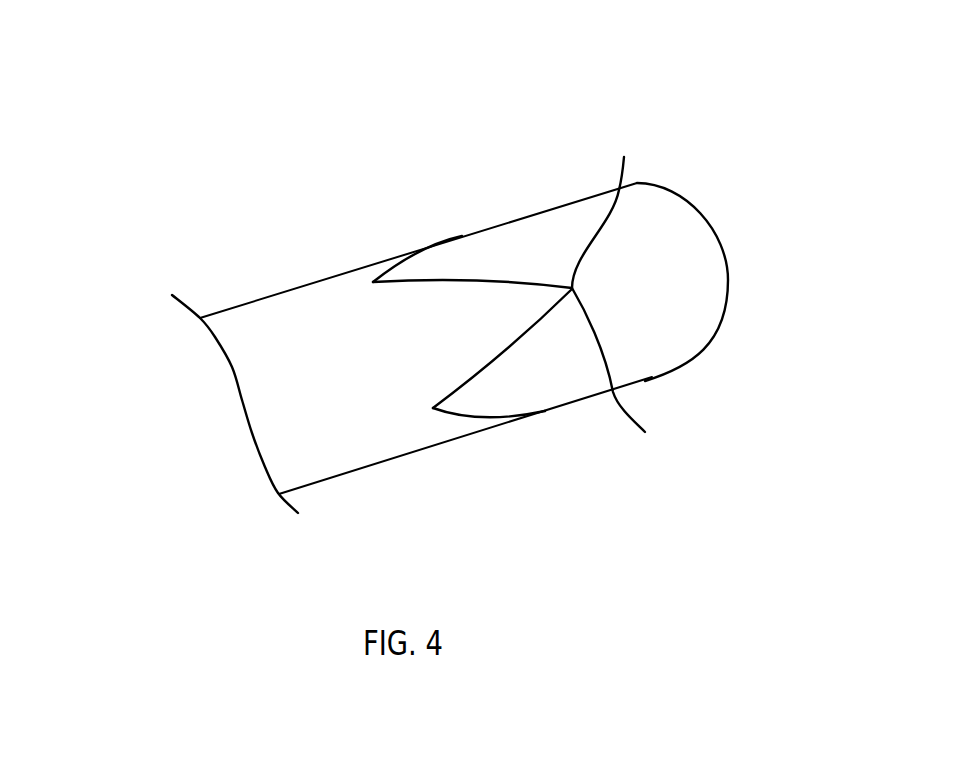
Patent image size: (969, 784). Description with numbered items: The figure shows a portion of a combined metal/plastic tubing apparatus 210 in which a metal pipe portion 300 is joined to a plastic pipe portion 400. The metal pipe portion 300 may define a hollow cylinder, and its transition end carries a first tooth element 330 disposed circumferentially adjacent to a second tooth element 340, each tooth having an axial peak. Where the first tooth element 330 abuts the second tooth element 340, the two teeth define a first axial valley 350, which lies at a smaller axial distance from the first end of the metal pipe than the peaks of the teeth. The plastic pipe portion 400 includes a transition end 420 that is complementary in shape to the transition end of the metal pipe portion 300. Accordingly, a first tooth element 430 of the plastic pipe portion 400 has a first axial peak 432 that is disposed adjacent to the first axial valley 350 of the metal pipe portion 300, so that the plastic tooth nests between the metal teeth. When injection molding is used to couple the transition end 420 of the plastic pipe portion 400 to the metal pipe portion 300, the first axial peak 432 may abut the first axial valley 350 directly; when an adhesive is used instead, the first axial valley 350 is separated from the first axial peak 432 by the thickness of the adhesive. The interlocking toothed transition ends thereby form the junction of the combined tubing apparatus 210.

The combined metal/plastic tubing apparatus 210 is at (192, 155).
The metal pipe portion 300 is at (522, 155).
The first tooth element 330 is at (516, 343).
The second tooth element 340 is at (449, 258).
The first axial valley 350 is at (602, 210).
The plastic pipe portion 400 is at (268, 266).
The transition end 420 is at (345, 224).
The first tooth element 430 is at (502, 348).
The first axial peak 432 is at (623, 371).